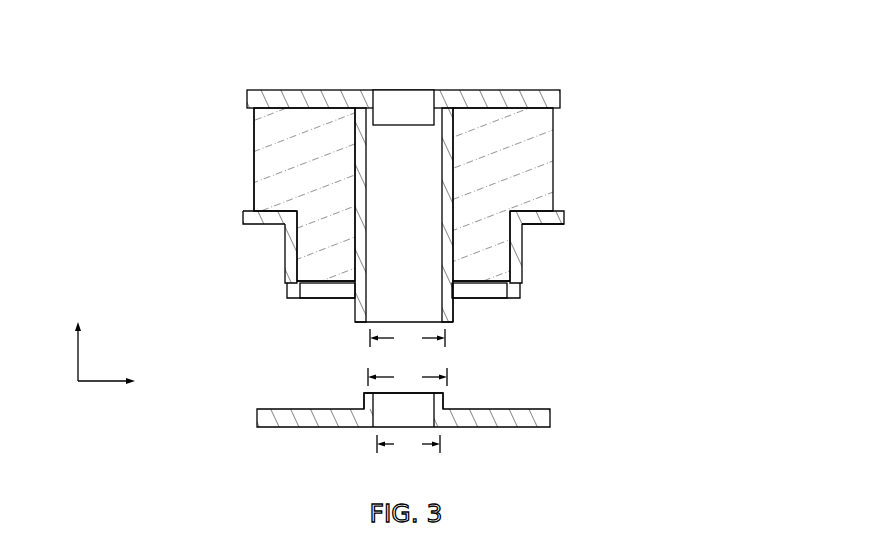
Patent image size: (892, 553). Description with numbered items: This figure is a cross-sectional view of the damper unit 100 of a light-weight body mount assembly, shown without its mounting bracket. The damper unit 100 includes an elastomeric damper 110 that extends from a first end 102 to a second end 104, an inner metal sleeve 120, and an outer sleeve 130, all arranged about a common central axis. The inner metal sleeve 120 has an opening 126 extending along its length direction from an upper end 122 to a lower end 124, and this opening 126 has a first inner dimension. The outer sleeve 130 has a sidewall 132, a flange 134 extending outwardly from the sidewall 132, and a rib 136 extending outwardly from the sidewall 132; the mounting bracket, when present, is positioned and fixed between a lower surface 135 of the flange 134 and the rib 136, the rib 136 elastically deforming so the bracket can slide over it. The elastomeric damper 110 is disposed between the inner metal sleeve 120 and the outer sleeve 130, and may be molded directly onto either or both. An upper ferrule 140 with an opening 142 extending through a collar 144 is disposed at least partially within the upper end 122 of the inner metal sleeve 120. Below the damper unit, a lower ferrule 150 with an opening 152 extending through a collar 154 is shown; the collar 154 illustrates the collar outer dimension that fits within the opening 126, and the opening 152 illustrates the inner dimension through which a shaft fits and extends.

The damper unit 100 is at (650, 80).
The first end 102 is at (253, 127).
The second end 104 is at (287, 290).
The elastomeric damper 110 is at (252, 166).
The inner metal sleeve 120 is at (353, 323).
The upper end 122 is at (362, 120).
The lower end 124 is at (453, 313).
The opening 126 is at (455, 283).
The outer sleeve 130 is at (568, 214).
The sidewall 132 is at (526, 266).
The flange 134 is at (241, 214).
The lower surface 135 is at (535, 225).
The rib 136 is at (285, 264).
The upper ferrule 140 is at (482, 84).
The opening 142 is at (410, 82).
The collar 144 is at (438, 113).
The lower ferrule 150 is at (489, 432).
The opening 152 is at (395, 415).
The collar 154 is at (442, 400).